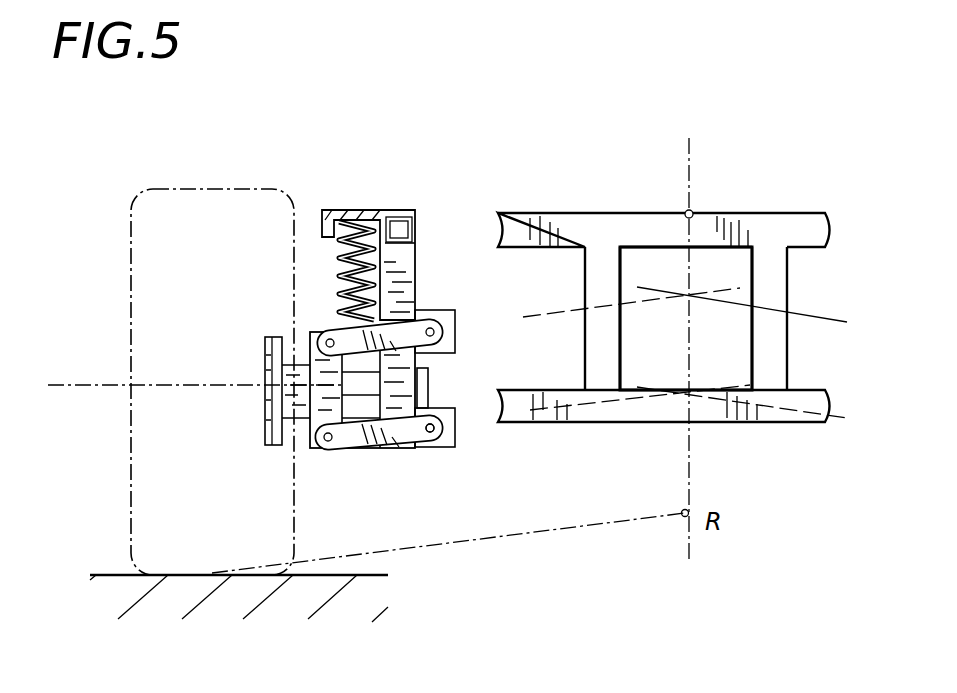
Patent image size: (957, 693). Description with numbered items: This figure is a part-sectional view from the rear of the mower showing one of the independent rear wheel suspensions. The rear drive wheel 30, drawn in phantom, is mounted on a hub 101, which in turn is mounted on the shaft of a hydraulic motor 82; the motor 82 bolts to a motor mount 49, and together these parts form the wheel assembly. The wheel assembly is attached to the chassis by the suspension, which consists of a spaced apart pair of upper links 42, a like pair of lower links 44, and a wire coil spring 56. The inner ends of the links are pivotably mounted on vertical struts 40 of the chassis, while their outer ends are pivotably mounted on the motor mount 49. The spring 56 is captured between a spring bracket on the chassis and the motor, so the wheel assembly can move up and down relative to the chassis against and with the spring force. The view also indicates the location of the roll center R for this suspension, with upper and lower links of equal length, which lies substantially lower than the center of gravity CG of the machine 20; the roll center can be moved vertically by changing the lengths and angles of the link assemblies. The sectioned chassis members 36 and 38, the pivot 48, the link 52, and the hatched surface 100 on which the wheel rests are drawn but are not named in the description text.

The wheelchair frame 20 is at (672, 323).
The wheel 30 is at (197, 189).
The upper frame member 36 is at (775, 213).
The lower frame member 38 is at (760, 420).
The vertical struts 40 is at (408, 270).
The upper links 42 is at (428, 352).
The lower links 44 is at (370, 456).
The pivot pin 48 is at (428, 452).
The motor mount 49 is at (311, 352).
The upper link 52 is at (434, 313).
The spring 56 is at (357, 220).
The hydraulic motor 82 is at (430, 390).
The ground surface 100 is at (203, 577).
The hub 101 is at (266, 348).